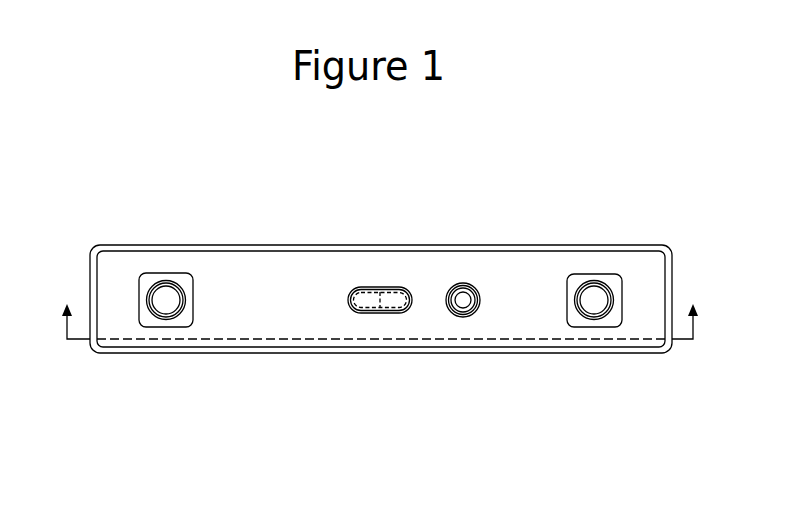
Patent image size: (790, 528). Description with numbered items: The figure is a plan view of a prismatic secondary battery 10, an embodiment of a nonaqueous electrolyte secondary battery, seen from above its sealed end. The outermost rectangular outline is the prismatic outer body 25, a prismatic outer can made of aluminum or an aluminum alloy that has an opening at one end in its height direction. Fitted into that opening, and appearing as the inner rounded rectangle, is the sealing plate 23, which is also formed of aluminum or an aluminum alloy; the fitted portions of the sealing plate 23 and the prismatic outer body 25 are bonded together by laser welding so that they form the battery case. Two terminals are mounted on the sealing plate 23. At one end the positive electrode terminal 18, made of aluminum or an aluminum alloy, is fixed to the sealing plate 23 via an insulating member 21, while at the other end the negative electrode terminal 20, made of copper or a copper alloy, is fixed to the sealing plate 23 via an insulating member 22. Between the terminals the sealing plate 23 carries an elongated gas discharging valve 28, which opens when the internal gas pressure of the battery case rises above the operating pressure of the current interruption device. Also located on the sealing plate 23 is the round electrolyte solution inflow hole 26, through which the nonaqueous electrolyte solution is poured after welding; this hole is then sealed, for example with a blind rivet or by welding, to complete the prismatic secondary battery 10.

The prismatic secondary battery 10 is at (350, 193).
The positive electrode terminal 18 is at (592, 296).
The negative electrode terminal 20 is at (164, 296).
The insulating member 21 is at (612, 322).
The insulating member 22 is at (184, 322).
The sealing plate 23 is at (285, 272).
The prismatic outer body 25 is at (367, 352).
The electrolyte solution inflow hole 26 is at (463, 309).
The gas discharging valve 28 is at (392, 296).